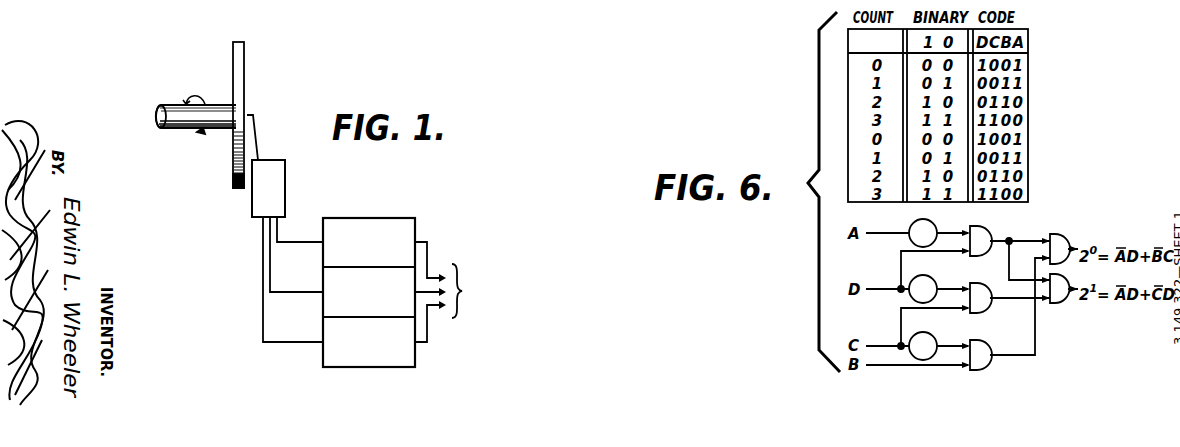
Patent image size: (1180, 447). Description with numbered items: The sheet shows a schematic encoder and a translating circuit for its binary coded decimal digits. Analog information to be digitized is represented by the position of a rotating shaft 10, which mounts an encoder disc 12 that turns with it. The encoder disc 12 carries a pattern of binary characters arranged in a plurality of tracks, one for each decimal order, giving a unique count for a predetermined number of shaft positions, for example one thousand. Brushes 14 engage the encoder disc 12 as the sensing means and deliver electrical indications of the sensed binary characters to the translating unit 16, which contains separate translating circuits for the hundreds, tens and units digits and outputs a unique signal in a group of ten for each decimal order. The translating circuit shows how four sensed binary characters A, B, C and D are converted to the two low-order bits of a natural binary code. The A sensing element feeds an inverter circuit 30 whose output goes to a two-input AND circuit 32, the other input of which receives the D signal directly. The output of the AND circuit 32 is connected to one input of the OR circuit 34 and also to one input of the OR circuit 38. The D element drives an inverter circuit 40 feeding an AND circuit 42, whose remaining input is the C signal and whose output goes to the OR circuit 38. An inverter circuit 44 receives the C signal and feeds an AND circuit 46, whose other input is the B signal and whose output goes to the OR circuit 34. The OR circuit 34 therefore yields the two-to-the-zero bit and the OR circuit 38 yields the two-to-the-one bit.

In FIG. 1, the rotating shaft 10 is at (184, 127).
In FIG. 1, the encoder disc 12 is at (244, 54).
In FIG. 1, the brushes 14 is at (277, 171).
In FIG. 1, the translating unit 16 is at (324, 224).
In FIG. 6, the inverter circuit 30 is at (946, 221).
In FIG. 6, the two-input AND circuit 32 is at (985, 228).
In FIG. 6, the OR circuit 34 is at (1060, 236).
In FIG. 6, the OR circuit 38 is at (1060, 302).
In FIG. 6, the inverter circuit 40 is at (934, 282).
In FIG. 6, the AND circuit 42 is at (988, 311).
In FIG. 6, the inverter circuit 44 is at (934, 339).
In FIG. 6, the AND circuit 46 is at (988, 368).